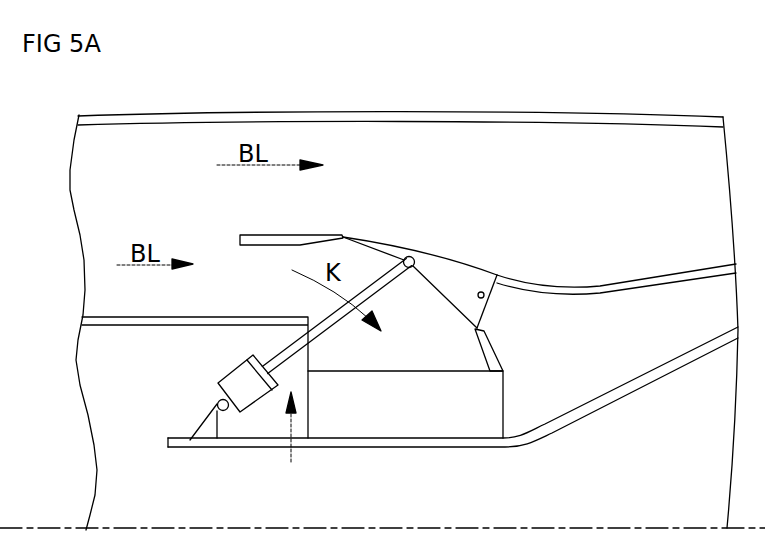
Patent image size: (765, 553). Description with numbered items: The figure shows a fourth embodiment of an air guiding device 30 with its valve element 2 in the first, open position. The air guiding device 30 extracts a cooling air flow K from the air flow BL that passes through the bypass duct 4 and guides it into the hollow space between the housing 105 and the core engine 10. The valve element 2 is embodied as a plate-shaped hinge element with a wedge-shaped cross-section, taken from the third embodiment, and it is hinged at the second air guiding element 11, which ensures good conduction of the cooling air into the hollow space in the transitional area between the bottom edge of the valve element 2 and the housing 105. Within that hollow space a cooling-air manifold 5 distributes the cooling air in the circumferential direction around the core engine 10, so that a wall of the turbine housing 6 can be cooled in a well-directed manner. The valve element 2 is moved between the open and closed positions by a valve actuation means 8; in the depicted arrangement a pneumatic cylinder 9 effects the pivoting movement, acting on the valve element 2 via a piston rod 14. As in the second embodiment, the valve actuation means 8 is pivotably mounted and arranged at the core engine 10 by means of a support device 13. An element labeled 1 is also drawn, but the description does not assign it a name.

The fixed plate / lip 1 is at (303, 238).
The valve element 2 is at (387, 252).
The bypass duct 4 is at (622, 208).
The cooling-air manifold 5 is at (482, 399).
The turbine housing 6 is at (631, 385).
The valve actuation means 8 is at (294, 449).
The pneumatic cylinder 9 is at (243, 395).
The core engine 10 is at (606, 503).
The second air guiding element 11 is at (495, 351).
The support device 13 is at (198, 422).
The piston rod 14 is at (327, 325).
The air guiding device 30 is at (470, 232).
The housing 105 is at (158, 318).